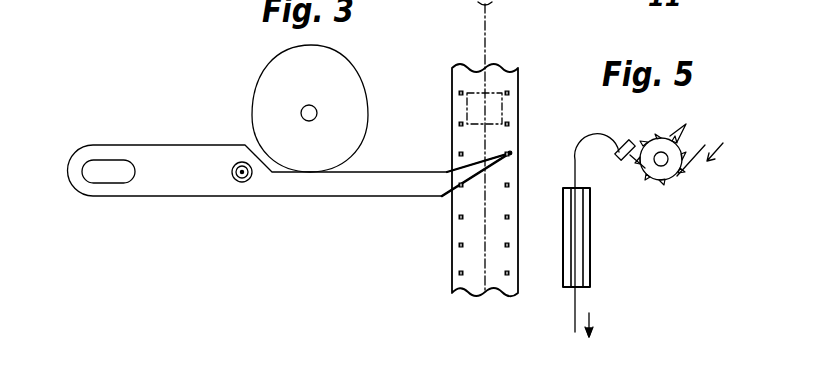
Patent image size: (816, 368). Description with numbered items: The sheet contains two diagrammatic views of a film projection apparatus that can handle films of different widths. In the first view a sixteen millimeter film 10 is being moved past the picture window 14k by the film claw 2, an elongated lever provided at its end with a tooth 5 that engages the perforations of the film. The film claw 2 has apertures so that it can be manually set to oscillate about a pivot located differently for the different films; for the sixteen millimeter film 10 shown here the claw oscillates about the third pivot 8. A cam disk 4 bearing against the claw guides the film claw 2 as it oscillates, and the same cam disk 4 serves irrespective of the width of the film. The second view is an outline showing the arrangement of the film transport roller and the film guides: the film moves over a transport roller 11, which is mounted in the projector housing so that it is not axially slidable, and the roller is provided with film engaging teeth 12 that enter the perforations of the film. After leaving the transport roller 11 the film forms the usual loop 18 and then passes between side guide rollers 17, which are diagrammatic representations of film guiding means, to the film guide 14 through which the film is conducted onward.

In FIG. 3, the film claw 2 is at (176, 184).
In FIG. 3, the cam disk 4 is at (282, 90).
In FIG. 3, the tooth 5 is at (513, 153).
In FIG. 3, the third pivot 8 is at (243, 181).
In FIG. 3, the 16 mm. film 10 is at (470, 140).
In FIG. 3, the picture window 14k is at (467, 94).
In FIG. 5, the transport roller 11 is at (663, 174).
In FIG. 5, the film engaging teeth 12 is at (695, 125).
In FIG. 5, the film guide 14 is at (566, 276).
In FIG. 5, the side guide rollers 17 is at (623, 160).
In FIG. 5, the loop 18 is at (605, 140).